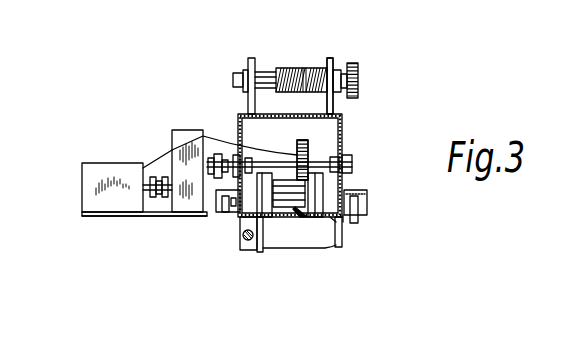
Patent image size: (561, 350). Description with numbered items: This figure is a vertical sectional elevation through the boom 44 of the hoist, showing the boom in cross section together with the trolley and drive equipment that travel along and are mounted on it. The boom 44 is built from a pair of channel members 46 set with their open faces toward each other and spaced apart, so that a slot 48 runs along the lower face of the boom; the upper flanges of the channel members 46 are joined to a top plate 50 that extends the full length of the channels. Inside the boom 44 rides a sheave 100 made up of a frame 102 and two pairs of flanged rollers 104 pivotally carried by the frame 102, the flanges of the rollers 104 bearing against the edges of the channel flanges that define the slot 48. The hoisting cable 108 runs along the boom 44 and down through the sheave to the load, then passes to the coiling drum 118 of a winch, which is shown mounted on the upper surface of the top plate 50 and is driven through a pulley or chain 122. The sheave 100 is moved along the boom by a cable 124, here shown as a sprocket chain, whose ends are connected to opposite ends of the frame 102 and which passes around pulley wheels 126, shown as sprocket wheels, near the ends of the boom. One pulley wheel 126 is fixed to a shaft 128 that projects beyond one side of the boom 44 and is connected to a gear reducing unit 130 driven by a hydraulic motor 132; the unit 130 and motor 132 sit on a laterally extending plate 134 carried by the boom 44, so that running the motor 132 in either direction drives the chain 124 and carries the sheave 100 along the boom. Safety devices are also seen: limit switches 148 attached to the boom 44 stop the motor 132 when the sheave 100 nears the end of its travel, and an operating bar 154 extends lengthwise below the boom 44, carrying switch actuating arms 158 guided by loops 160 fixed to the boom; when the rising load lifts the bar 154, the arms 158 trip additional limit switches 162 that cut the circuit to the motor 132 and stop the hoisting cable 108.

The boom 44 is at (348, 118).
The channel members 46 is at (238, 122).
The slot 48 is at (257, 250).
The top plate 50 is at (352, 100).
The sheave 100 is at (333, 225).
The frame 102 is at (343, 216).
The flanged rollers 104 is at (318, 195).
The hoisting cable 108 is at (283, 66).
The coiling drum 118 is at (330, 58).
The pulley or chain 122 is at (358, 68).
The cable 124 is at (303, 140).
The pulley wheels 126 is at (239, 128).
The shaft 128 is at (310, 160).
The gear reducing unit 130 is at (172, 132).
The hydraulic motor 132 is at (98, 170).
The laterally extending plate 134 is at (137, 214).
The limit switches 148 is at (365, 200).
The operating bar 154 is at (243, 238).
The switch actuating arms 158 is at (213, 188).
The loops 160 is at (233, 212).
The limit switches 162 is at (205, 217).